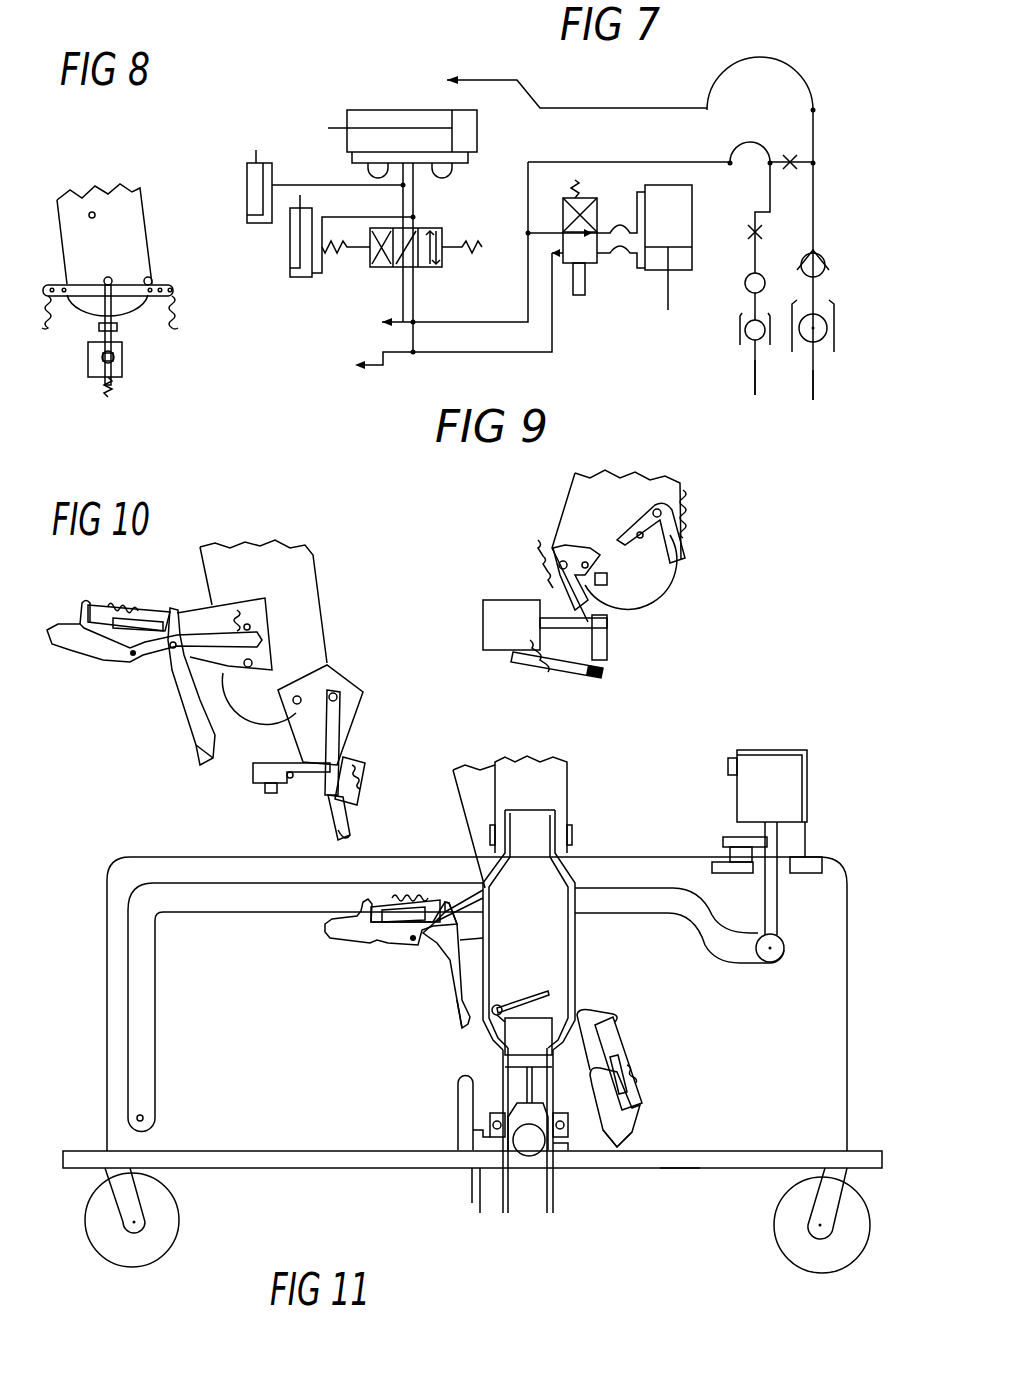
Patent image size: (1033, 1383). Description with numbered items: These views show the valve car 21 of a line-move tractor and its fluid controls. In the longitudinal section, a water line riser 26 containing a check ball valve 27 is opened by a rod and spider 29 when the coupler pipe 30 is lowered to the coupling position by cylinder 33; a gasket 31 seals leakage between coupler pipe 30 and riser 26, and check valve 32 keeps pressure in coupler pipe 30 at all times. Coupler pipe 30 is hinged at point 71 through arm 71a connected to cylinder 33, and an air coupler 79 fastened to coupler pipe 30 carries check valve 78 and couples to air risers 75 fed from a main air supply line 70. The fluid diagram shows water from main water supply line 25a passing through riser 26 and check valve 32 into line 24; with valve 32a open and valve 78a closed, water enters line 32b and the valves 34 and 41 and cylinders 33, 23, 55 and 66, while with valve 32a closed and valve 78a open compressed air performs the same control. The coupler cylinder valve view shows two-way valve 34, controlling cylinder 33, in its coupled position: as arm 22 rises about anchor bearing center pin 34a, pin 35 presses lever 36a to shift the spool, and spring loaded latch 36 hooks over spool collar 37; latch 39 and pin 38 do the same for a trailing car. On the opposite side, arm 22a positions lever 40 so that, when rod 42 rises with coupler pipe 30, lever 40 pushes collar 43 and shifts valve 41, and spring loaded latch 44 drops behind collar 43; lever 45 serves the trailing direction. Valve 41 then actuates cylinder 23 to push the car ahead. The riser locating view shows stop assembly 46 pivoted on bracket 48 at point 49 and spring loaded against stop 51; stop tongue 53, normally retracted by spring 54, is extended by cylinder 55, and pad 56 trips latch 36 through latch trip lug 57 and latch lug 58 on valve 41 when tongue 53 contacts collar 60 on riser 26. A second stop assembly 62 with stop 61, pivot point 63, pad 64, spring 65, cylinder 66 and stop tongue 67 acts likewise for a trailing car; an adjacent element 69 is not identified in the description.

In FIG. 11, the valve car 21 is at (845, 1052).
In FIG. 8, the arm 22 is at (148, 227).
In FIG. 10, the arm 22 is at (325, 600).
In FIG. 11, the arm 22 is at (455, 810).
In FIG. 9, the arm 22a is at (562, 502).
In FIG. 7, the cylinder 23 is at (422, 109).
In FIG. 7, the line 24 is at (775, 58).
In FIG. 11, the line 24 is at (570, 780).
In FIG. 7, the main water supply line 25a is at (805, 384).
In FIG. 7, the water line riser 26 is at (836, 342).
In FIG. 11, the water line riser 26 is at (556, 1180).
In FIG. 11, the check ball valve 27 is at (532, 1160).
In FIG. 11, the rod and spider 29 is at (538, 1052).
In FIG. 11, the coupler pipe 30 is at (578, 932).
In FIG. 11, the gasket 31 is at (565, 1126).
In FIG. 7, the check valve 32 is at (830, 261).
In FIG. 11, the check valve 32 is at (528, 1002).
In FIG. 7, the valve 32a is at (798, 170).
In FIG. 7, the line 32b is at (654, 160).
In FIG. 7, the cylinder 33 is at (652, 275).
In FIG. 11, the cylinder 33 is at (733, 812).
In FIG. 7, the two-way valve 34 is at (596, 202).
In FIG. 8, the two-way valve 34 is at (90, 372).
In FIG. 8, the anchor bearing center pin 34a is at (110, 277).
In FIG. 8, the pin 35 is at (152, 278).
In FIG. 8, the spring loaded latch 36 is at (108, 310).
In FIG. 8, the lever 36a is at (108, 305).
In FIG. 8, the spool collar 37 is at (120, 328).
In FIG. 8, the pin 38 is at (96, 213).
In FIG. 8, the latch 39 is at (85, 284).
In FIG. 9, the lever 40 is at (575, 548).
In FIG. 7, the valve 41 is at (432, 220).
In FIG. 9, the valve 41 is at (505, 598).
In FIG. 9, the rod 42 is at (610, 580).
In FIG. 9, the collar 43 is at (610, 626).
In FIG. 9, the spring loaded latch 44 is at (612, 650).
In FIG. 9, the lever 45 is at (620, 522).
In FIG. 10, the stop assembly 46 is at (185, 720).
In FIG. 11, the stop assembly 46 is at (430, 950).
In FIG. 10, the bracket 48 is at (300, 680).
In FIG. 10, the point 49 is at (170, 650).
In FIG. 10, the stop 51 is at (250, 628).
In FIG. 10, the stop tongue 53 is at (62, 650).
In FIG. 11, the stop tongue 53 is at (337, 946).
In FIG. 10, the spring 54 is at (140, 600).
In FIG. 11, the spring 54 is at (417, 897).
In FIG. 7, the cylinder 55 is at (290, 256).
In FIG. 10, the cylinder 55 is at (165, 607).
In FIG. 11, the cylinder 55 is at (380, 906).
In FIG. 10, the pad 56 is at (198, 752).
In FIG. 11, the pad 56 is at (448, 1010).
In FIG. 8, the latch trip lug 57 is at (122, 355).
In FIG. 10, the latch trip lug 57 is at (263, 795).
In FIG. 9, the latch lug 58 is at (608, 674).
In FIG. 11, the collar 60 is at (570, 1170).
In FIG. 10, the stop 61 is at (340, 694).
In FIG. 11, the stop assembly 62 is at (570, 1075).
In FIG. 10, the pivot point 63 is at (288, 780).
In FIG. 10, the pad 64 is at (252, 770).
In FIG. 10, the spring 65 is at (365, 772).
In FIG. 11, the spring 65 is at (632, 1055).
In FIG. 7, the cylinder 66 is at (256, 150).
In FIG. 10, the cylinder 66 is at (330, 808).
In FIG. 11, the cylinder 66 is at (625, 1090).
In FIG. 10, the stop tongue 67 is at (335, 836).
In FIG. 11, the stop tongue 67 is at (634, 1140).
In FIG. 10, the spring 69 is at (342, 750).
In FIG. 7, the main air supply line 70 is at (748, 358).
In FIG. 11, the main air supply line 70 is at (672, 1172).
In FIG. 11, the point 71 is at (145, 1116).
In FIG. 11, the arm 71a is at (150, 1050).
In FIG. 7, the air risers 75 is at (740, 348).
In FIG. 11, the air risers 75 is at (470, 1180).
In FIG. 7, the check valve 78 is at (742, 287).
In FIG. 7, the valve 78a is at (742, 242).
In FIG. 11, the air coupler 79 is at (452, 1093).